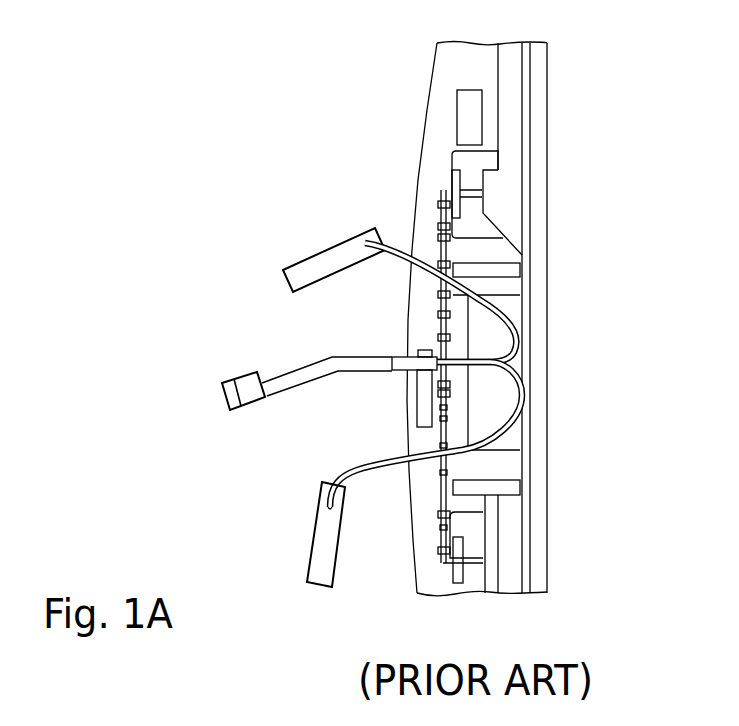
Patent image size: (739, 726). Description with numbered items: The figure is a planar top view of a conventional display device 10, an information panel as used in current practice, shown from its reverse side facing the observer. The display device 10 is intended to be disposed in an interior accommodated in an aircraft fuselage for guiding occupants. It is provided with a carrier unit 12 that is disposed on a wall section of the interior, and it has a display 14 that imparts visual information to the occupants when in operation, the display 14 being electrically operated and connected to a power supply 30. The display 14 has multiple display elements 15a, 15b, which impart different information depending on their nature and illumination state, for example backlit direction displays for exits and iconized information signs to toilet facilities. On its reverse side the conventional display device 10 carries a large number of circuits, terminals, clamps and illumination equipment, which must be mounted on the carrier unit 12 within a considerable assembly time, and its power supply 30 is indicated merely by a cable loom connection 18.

The display device 10 is at (228, 88).
The carrier unit 12 is at (438, 108).
The display 14 is at (312, 212).
The display element 15a is at (487, 328).
The display element 15b is at (440, 190).
The cable loom connection 18 is at (228, 398).
The power supply 30 is at (200, 418).